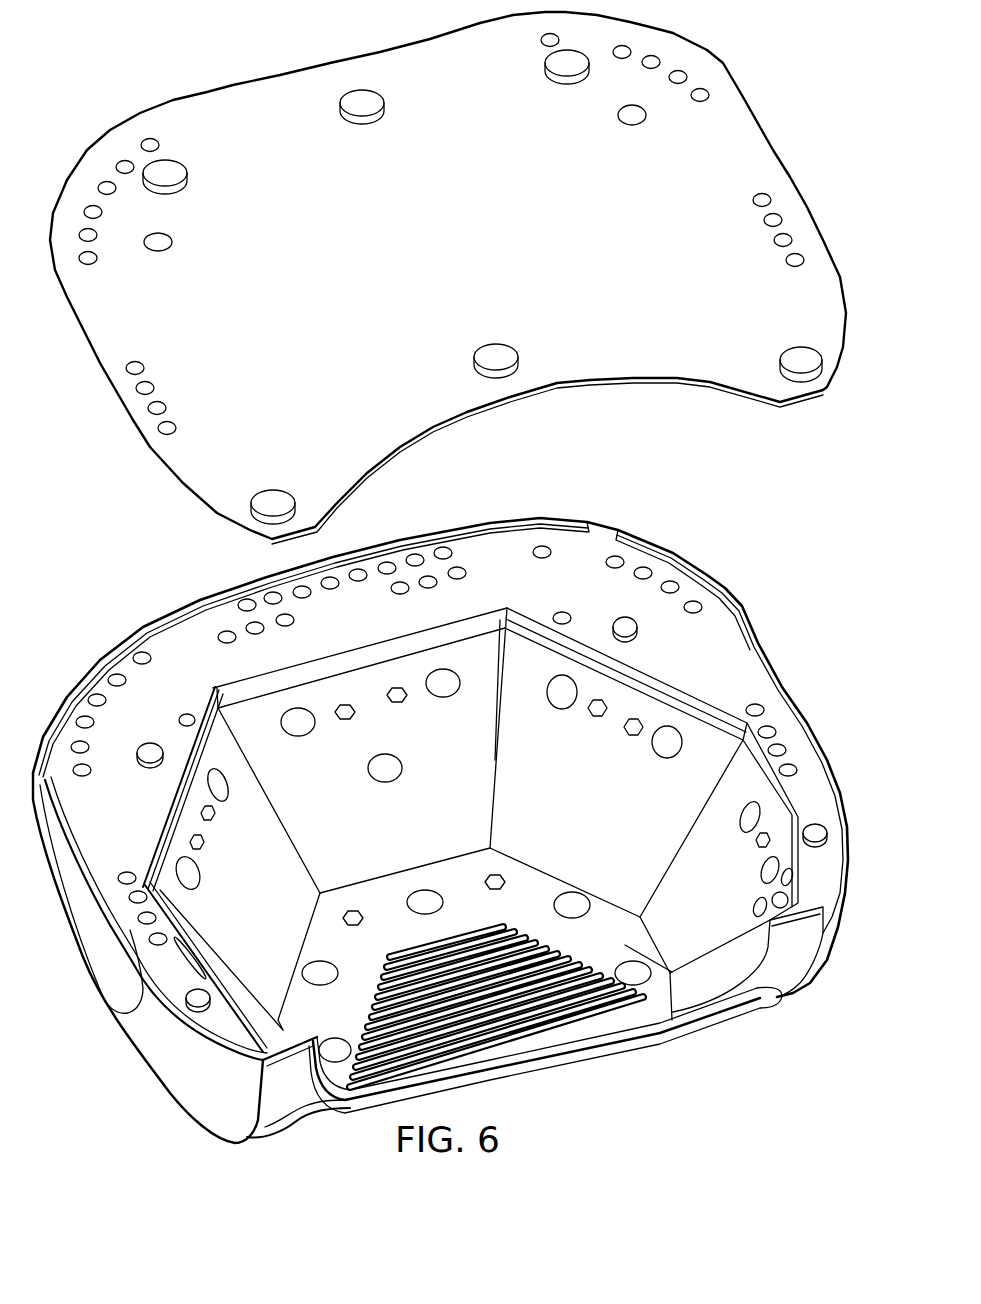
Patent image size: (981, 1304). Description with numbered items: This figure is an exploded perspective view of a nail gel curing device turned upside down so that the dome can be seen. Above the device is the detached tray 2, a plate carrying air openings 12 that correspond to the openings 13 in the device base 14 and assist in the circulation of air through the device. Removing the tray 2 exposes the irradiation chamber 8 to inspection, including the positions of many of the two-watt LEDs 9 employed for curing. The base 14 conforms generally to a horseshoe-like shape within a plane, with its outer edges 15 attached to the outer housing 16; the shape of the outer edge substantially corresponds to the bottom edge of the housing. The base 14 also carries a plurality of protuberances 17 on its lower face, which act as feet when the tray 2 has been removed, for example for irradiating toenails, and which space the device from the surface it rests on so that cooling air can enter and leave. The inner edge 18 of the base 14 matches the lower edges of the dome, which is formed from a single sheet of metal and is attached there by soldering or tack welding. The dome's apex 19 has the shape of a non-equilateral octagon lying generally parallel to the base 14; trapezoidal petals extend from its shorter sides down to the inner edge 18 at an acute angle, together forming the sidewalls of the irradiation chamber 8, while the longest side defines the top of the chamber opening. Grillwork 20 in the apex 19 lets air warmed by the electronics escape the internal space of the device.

The tray 2 is at (235, 130).
The irradiation chamber 8 is at (653, 1082).
The LEDs 9 is at (455, 682).
The air openings 12 is at (762, 200).
The openings 13 is at (125, 878).
The device base 14 is at (180, 643).
The outer edges 15 is at (673, 557).
The outer housing 16 is at (207, 1097).
The protuberances 17 is at (153, 168).
The inner edge 18 is at (493, 612).
The apex 19 is at (672, 972).
The grillwork 20 is at (485, 1003).